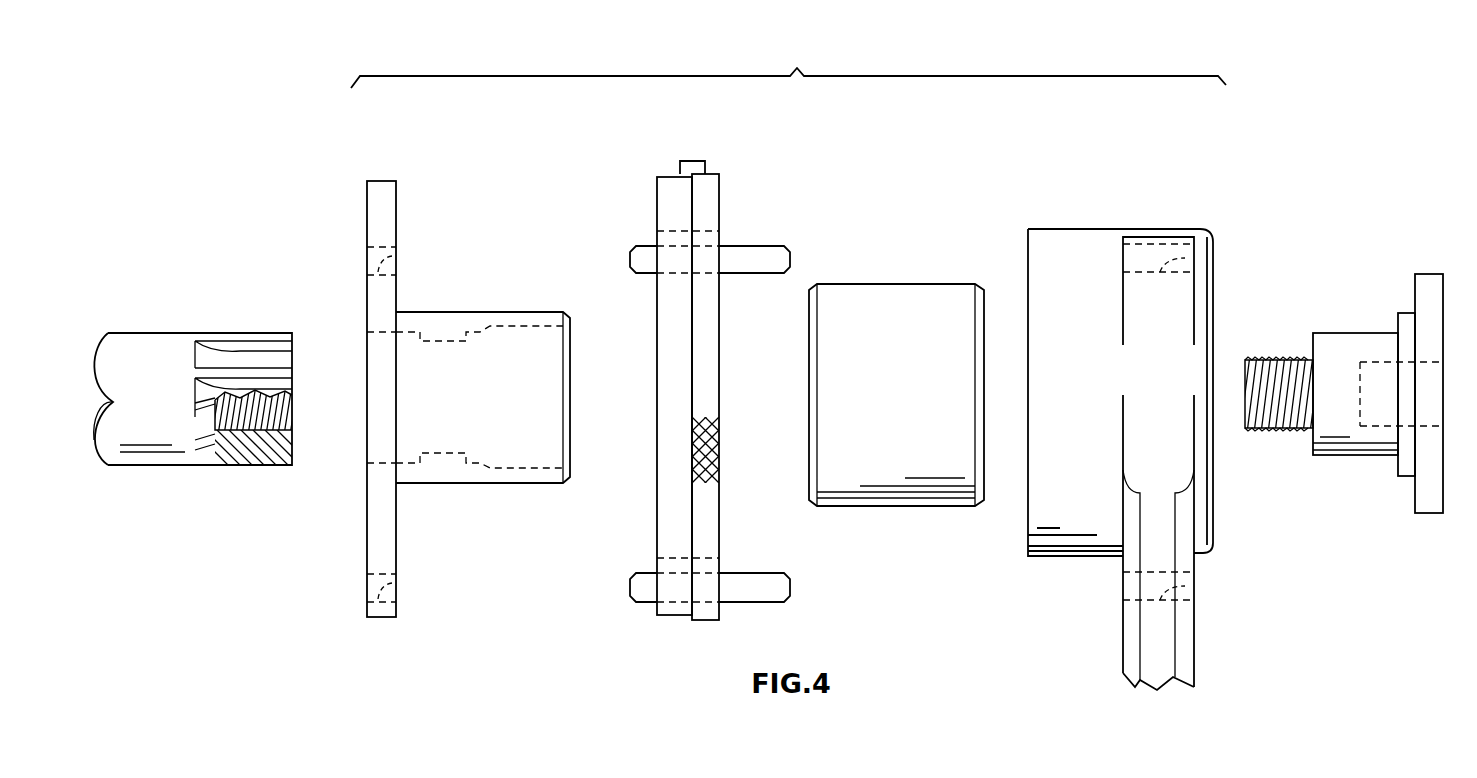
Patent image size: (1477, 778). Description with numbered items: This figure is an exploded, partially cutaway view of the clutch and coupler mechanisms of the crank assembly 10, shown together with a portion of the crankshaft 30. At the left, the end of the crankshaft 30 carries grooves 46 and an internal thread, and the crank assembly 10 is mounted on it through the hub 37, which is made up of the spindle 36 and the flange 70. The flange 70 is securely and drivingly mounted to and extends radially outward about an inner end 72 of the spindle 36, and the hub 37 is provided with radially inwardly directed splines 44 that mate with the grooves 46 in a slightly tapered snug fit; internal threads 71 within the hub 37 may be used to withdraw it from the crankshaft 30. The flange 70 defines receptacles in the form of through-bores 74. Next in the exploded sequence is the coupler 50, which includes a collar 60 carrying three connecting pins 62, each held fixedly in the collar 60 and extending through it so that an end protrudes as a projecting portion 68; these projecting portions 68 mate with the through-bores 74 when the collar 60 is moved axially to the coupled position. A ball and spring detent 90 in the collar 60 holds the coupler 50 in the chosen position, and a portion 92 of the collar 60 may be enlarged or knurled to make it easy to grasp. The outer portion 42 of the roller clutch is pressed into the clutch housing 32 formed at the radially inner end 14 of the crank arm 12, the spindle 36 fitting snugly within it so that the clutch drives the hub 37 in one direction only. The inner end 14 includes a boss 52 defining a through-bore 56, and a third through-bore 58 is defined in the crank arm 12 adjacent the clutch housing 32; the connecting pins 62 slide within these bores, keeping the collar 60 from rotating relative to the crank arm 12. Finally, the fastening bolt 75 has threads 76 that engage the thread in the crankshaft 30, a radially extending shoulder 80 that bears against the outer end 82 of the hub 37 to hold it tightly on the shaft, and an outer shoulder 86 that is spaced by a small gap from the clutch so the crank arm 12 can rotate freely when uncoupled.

The crank assembly 10 is at (1116, 413).
The crank arm 12 is at (1194, 650).
The radially inner end 14 is at (1097, 229).
The crankshaft 30 is at (140, 467).
The clutch housing 32 is at (1028, 541).
The spindle 36 is at (490, 484).
The hub 37 is at (366, 226).
The outer portion 42 is at (900, 284).
The splines 44 is at (440, 345).
The grooves 46 is at (255, 358).
The coupler 50 is at (788, 59).
The boss 52 is at (1160, 237).
The through-bore 56 is at (1185, 262).
The third through-bore 58 is at (1185, 590).
The collar 60 is at (657, 507).
The connecting pins 62 is at (768, 246).
The projecting portion 68 is at (640, 246).
The flange 70 is at (367, 549).
The internal threads 71 is at (292, 414).
The inner end 72 is at (367, 493).
The through-bores 74 is at (396, 258).
The fastening bolt 75 is at (1428, 513).
The threads 76 is at (1278, 360).
The shoulder 80 is at (1398, 465).
The outer end 82 is at (570, 395).
The outer shoulder 86 is at (1415, 292).
The ball and spring detent 90 is at (693, 161).
The portion 92 is at (719, 446).